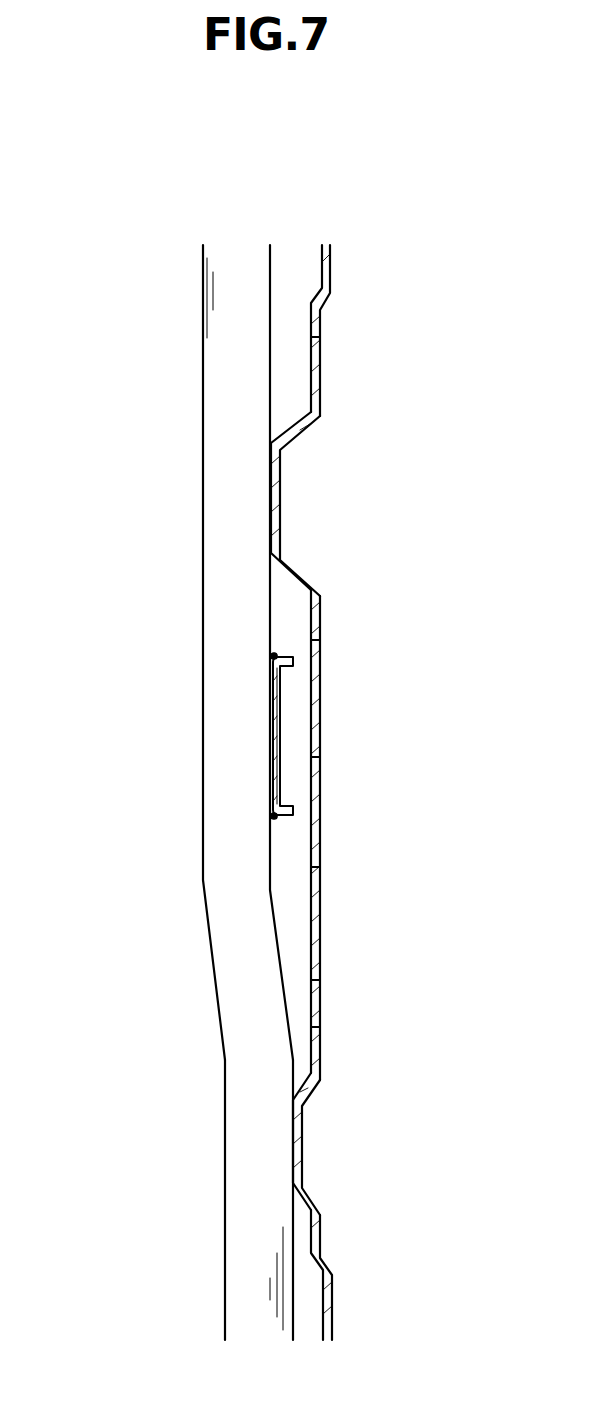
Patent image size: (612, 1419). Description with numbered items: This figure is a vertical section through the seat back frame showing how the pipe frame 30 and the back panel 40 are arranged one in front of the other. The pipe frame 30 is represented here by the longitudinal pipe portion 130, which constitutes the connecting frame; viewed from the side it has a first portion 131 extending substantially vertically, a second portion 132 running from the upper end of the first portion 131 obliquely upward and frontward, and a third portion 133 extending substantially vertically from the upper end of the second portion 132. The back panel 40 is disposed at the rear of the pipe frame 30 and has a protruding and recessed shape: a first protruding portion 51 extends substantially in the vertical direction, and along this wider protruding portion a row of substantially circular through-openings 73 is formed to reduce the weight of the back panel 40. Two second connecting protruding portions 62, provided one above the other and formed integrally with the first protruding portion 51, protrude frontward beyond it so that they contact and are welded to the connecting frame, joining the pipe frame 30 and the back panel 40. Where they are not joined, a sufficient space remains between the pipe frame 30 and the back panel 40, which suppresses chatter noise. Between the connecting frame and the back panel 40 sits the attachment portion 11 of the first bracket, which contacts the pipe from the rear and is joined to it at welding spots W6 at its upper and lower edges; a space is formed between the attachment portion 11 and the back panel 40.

The pipe frame 30 is at (175, 792).
The back panel 40 is at (265, 792).
The longitudinal pipe portion 130 is at (175, 792).
The third portion 133 is at (225, 390).
The second portion 132 is at (238, 988).
The first portion 131 is at (235, 1208).
The second connecting protruding portion 62 is at (270, 468).
The through-opening 73 is at (318, 378).
The first protruding portion 51 is at (312, 932).
The attachment portion 11 is at (278, 732).
The welds W6 is at (276, 653).